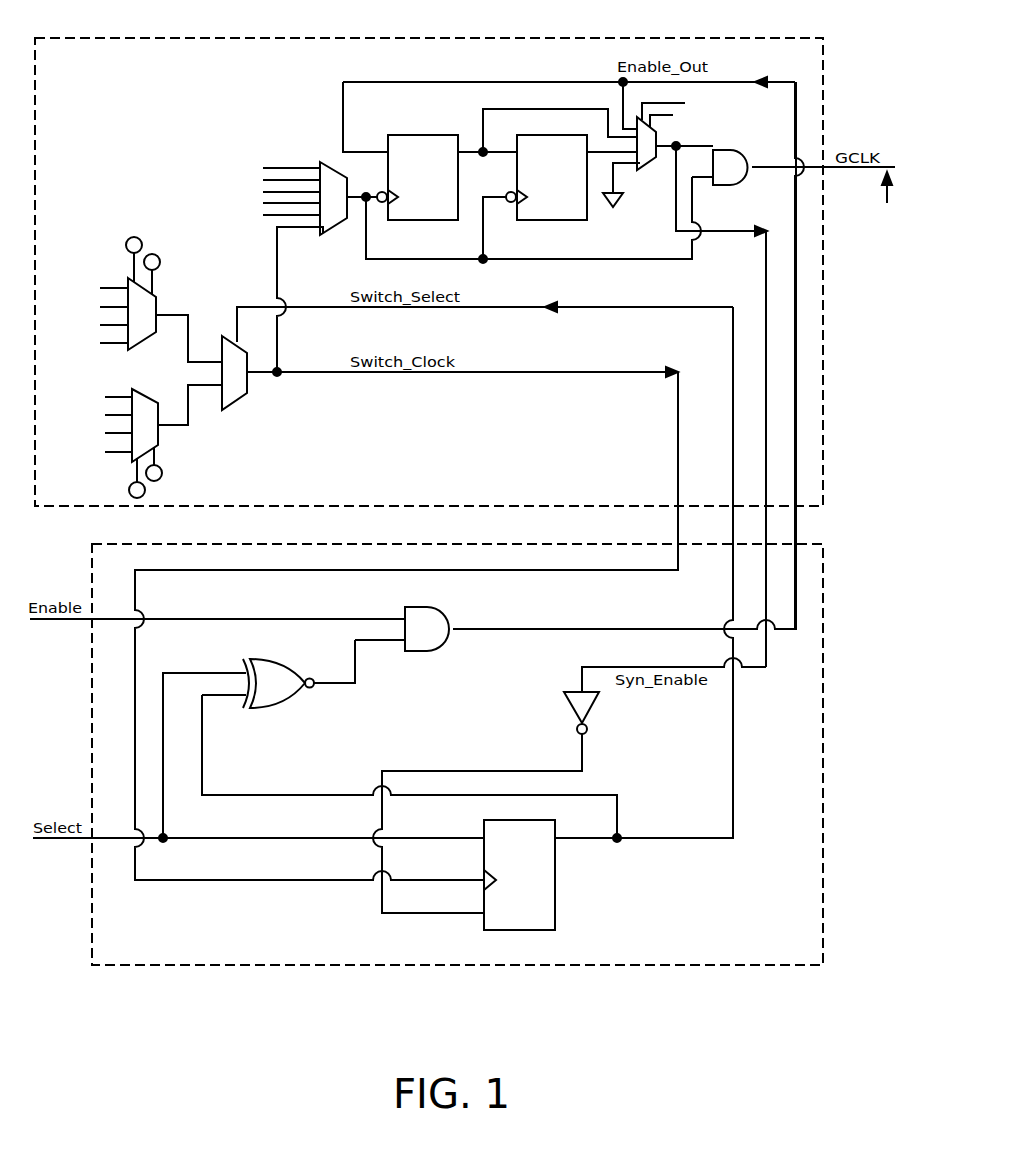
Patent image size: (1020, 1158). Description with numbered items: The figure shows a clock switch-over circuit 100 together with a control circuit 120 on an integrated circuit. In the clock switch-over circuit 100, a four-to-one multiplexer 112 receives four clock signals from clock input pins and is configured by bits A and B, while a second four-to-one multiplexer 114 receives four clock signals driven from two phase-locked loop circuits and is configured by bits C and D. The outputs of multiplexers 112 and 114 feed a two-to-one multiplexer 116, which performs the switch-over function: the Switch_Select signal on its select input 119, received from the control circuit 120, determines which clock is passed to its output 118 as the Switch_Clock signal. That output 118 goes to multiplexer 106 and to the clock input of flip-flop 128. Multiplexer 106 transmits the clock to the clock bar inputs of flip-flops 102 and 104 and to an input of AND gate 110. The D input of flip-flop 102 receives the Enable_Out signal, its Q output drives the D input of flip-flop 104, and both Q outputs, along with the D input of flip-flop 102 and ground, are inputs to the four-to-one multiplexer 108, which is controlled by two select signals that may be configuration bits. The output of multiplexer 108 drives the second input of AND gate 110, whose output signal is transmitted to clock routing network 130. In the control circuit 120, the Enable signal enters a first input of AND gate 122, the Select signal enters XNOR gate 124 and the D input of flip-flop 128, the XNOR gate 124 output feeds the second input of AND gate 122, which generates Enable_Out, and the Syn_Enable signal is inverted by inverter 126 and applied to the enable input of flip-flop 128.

The clock switch-over circuit 100 is at (488, 37).
The flip-flop 102 is at (430, 135).
The flip-flop 104 is at (533, 220).
The multiplexer 106 is at (335, 228).
The multiplexer 108 is at (651, 160).
The AND gate 110 is at (728, 150).
The multiplexer 112 is at (158, 300).
The multiplexer 114 is at (160, 444).
The multiplexer 116 is at (240, 400).
The output 118 is at (270, 377).
The select input 119 is at (257, 306).
The control circuit 120 is at (432, 544).
The AND gate 122 is at (423, 651).
The XNOR gate 124 is at (279, 708).
The inverter 126 is at (592, 707).
The flip-flop 128 is at (555, 888).
The clock routing network 130 is at (887, 241).